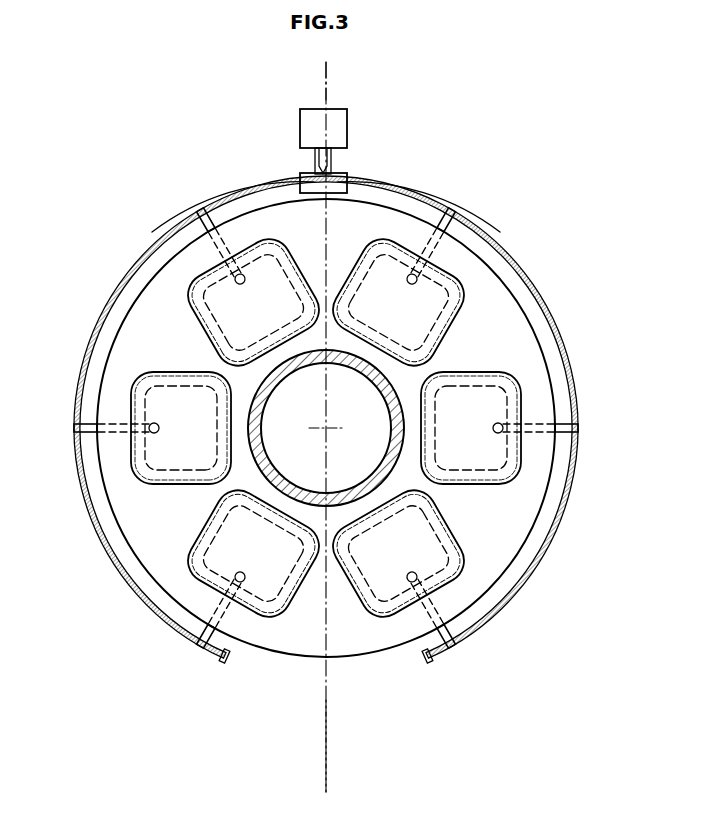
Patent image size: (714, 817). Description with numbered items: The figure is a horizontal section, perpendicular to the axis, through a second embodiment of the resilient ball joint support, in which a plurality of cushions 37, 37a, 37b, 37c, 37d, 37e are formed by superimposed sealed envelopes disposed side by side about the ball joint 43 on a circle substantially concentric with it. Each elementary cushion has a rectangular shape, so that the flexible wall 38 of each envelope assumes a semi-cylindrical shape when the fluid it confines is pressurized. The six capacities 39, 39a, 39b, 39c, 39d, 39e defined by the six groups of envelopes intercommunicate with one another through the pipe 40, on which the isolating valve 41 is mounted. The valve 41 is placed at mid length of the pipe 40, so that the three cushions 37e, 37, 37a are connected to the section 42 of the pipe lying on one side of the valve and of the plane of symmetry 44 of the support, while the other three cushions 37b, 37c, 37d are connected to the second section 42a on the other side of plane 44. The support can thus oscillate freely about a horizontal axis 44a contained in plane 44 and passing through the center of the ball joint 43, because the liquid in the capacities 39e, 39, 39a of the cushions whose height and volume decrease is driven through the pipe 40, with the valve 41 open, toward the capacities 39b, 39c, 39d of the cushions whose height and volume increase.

The cushion 37 is at (523, 381).
The cushion 37a is at (461, 574).
The cushion 37b is at (195, 576).
The cushion 37c is at (131, 393).
The cushion 37d is at (210, 268).
The cushion 37e is at (451, 272).
The flexible wall 38 is at (508, 469).
The capacity 39 is at (509, 401).
The capacity 39a is at (443, 584).
The capacity 39b is at (207, 593).
The capacity 39c is at (141, 411).
The capacity 39d is at (217, 279).
The capacity 39e is at (441, 239).
The intercommunication pipe 40 is at (80, 498).
The isolating valve 41 is at (300, 124).
The pipe section 42 is at (408, 190).
The second pipe section 42a is at (262, 185).
The ball joint 43 is at (399, 386).
The plane of symmetry 44 is at (334, 750).
The horizontal axis 44a is at (332, 67).